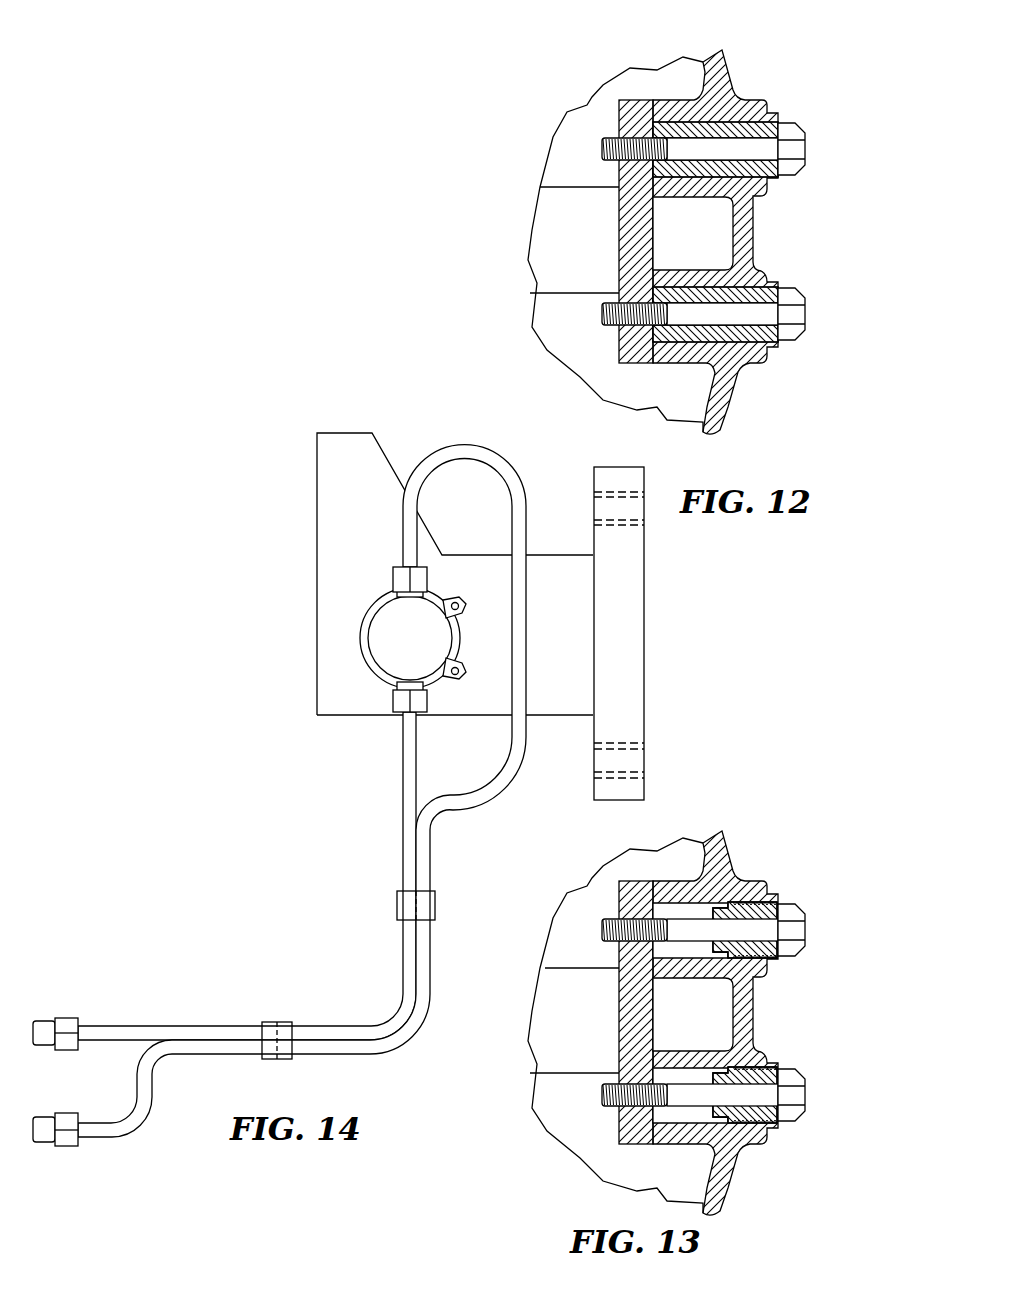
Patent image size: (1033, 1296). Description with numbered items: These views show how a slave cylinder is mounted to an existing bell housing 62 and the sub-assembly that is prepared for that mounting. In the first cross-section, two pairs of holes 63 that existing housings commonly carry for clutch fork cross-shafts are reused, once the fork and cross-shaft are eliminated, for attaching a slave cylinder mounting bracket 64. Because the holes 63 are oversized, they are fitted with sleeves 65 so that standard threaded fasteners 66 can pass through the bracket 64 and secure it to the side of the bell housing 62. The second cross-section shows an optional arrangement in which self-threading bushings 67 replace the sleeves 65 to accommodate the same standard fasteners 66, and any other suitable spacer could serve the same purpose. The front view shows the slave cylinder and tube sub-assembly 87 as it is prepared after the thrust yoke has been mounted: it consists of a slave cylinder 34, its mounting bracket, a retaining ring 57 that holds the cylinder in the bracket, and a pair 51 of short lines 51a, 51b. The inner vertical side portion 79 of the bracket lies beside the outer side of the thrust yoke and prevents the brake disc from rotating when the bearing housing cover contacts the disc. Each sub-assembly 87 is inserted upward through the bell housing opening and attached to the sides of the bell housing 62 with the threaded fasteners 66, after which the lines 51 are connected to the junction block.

In FIG. 14, the slave cylinder 34 is at (373, 668).
In FIG. 14, the pair of short lines 51 is at (283, 795).
In FIG. 14, the short line 51a is at (383, 1055).
In FIG. 14, the short line 51b is at (342, 1025).
In FIG. 14, the retaining ring 57 is at (368, 608).
In FIG. 12, the bell housing 62 is at (664, 246).
In FIG. 13, the bell housing 62 is at (673, 1024).
In FIG. 12, the holes 63 is at (669, 177).
In FIG. 13, the holes 63 is at (690, 1013).
In FIG. 14, the slave cylinder mounting bracket 64 is at (644, 602).
In FIG. 12, the sleeve 65 is at (675, 121).
In FIG. 12, the threaded fastener 66 is at (602, 140).
In FIG. 13, the threaded fastener 66 is at (642, 1026).
In FIG. 13, the self-threading bushing 67 is at (702, 1001).
In FIG. 14, the inner vertical side portion 79 is at (320, 488).
In FIG. 14, the slave cylinder and tube sub-assembly 87 is at (186, 781).